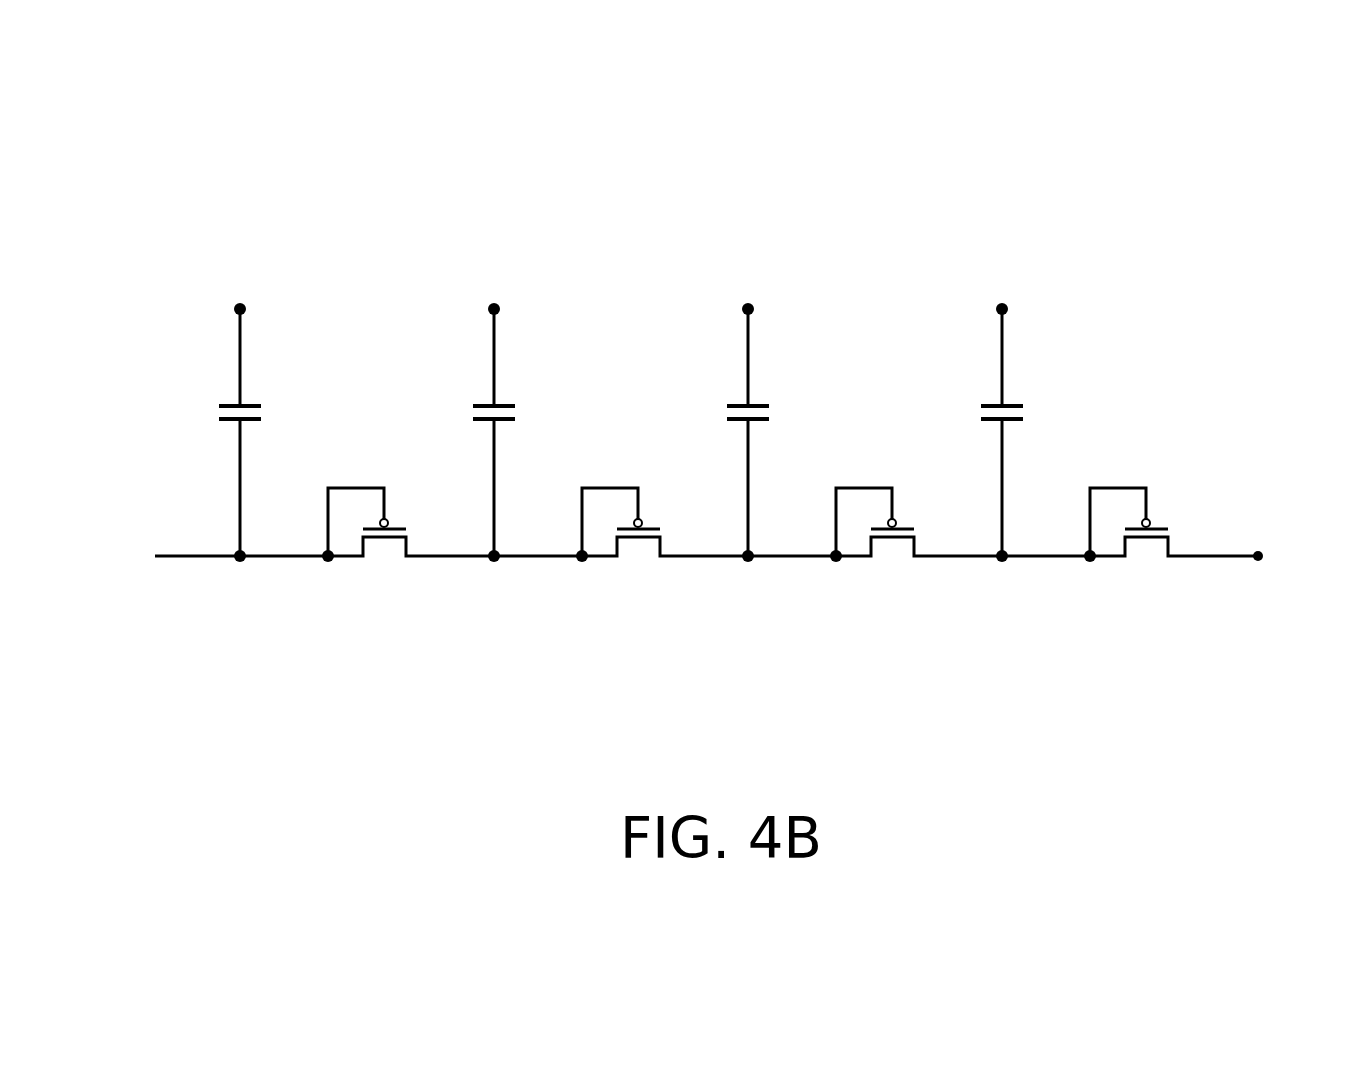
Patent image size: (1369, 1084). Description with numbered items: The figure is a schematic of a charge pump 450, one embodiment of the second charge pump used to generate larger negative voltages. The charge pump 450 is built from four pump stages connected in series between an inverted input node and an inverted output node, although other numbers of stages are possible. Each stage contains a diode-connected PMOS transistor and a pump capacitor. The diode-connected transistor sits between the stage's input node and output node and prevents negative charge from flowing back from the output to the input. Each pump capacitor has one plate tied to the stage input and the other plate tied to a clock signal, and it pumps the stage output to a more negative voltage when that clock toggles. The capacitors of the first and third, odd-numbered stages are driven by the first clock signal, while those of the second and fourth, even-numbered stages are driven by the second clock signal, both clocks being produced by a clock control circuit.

The charge pump 450 is at (197, 683).